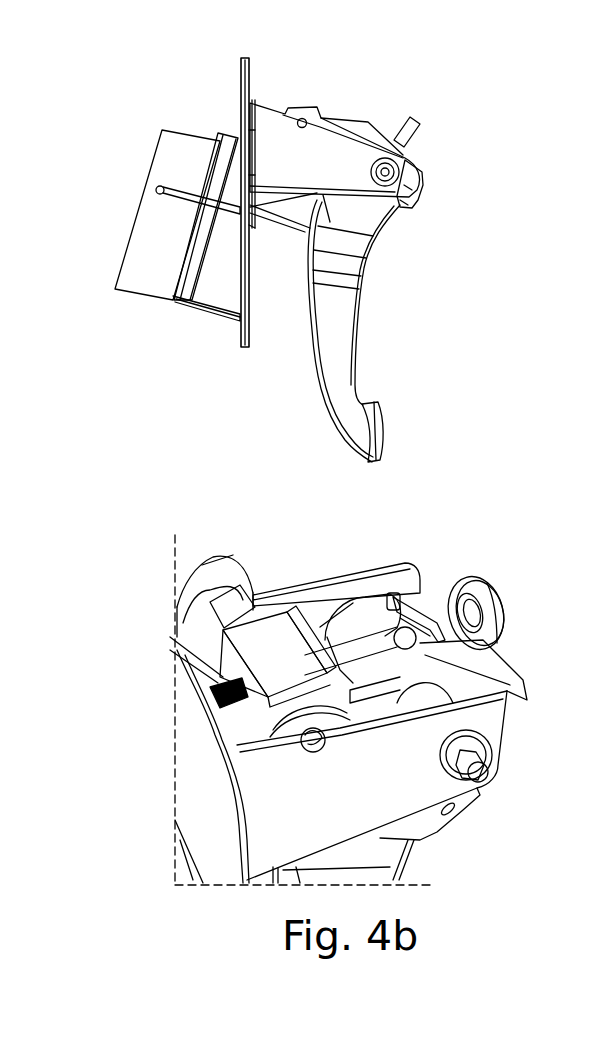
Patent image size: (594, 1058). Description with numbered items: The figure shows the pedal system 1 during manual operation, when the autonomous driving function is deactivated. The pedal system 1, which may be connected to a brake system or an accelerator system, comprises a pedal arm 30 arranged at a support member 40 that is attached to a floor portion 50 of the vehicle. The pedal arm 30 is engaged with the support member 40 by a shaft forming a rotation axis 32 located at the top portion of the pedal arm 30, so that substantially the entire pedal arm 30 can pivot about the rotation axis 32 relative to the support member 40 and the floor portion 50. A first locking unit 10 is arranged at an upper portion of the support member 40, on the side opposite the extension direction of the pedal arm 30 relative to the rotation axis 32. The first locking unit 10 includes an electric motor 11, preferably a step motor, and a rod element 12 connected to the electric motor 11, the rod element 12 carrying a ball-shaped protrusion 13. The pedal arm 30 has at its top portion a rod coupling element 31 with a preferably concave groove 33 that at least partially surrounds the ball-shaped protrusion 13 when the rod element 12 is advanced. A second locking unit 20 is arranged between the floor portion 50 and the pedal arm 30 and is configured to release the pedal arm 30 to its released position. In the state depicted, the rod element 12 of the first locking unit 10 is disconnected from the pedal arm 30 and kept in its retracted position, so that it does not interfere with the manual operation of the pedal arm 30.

The pedal system 1 is at (408, 103).
The first locking unit 10 is at (435, 136).
The electric motor 11 is at (270, 640).
The rod element 12 is at (323, 643).
The ball-shaped protrusion 13 is at (397, 595).
The second locking unit 20 is at (263, 245).
The pedal arm 30 is at (337, 347).
The rod coupling element 31 is at (463, 600).
The rotation axis 32 is at (487, 780).
The groove 33 is at (473, 610).
The support member 40 is at (270, 140).
The floor portion 50 is at (230, 315).